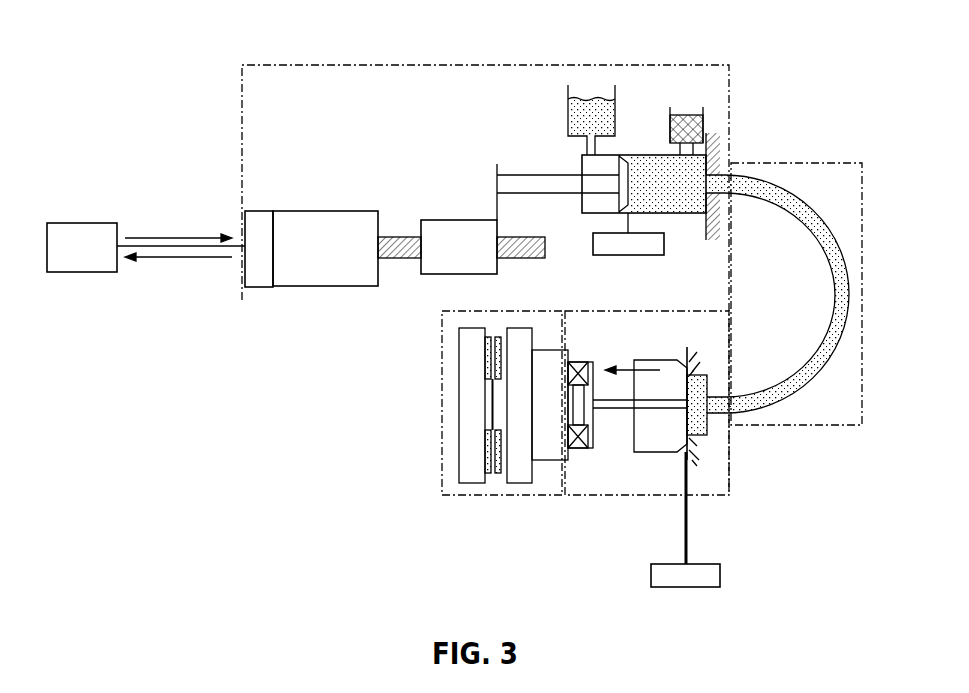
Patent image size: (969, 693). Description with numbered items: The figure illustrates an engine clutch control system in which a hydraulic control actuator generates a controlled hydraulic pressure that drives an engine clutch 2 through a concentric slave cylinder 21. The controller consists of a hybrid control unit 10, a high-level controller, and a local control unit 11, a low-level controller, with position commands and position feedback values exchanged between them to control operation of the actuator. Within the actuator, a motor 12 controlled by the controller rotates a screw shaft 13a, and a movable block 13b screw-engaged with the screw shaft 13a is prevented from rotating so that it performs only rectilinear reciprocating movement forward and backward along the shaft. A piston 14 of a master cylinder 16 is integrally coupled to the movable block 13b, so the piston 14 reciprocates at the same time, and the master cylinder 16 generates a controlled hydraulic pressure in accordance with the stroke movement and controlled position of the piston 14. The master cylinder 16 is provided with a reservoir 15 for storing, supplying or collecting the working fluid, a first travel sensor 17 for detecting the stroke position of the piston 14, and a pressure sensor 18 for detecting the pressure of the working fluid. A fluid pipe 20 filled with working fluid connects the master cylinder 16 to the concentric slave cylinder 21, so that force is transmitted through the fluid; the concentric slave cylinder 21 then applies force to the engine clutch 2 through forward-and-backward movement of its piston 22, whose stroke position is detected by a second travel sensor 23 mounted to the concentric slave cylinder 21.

The engine clutch 2 is at (443, 469).
The hybrid control unit 10 is at (78, 222).
The local control unit 11 is at (258, 290).
The motor 12 is at (338, 211).
The screw shaft 13a is at (399, 237).
The movable block 13b is at (460, 220).
The piston 14 is at (522, 175).
The reservoir 15 is at (568, 91).
The master cylinder 16 is at (648, 128).
The first travel sensor 17 is at (612, 256).
The pressure sensor 18 is at (703, 118).
The fluid pipe 20 is at (833, 232).
The concentric slave cylinder 21 is at (662, 478).
The piston 22 is at (610, 410).
The second travel sensor 23 is at (710, 564).